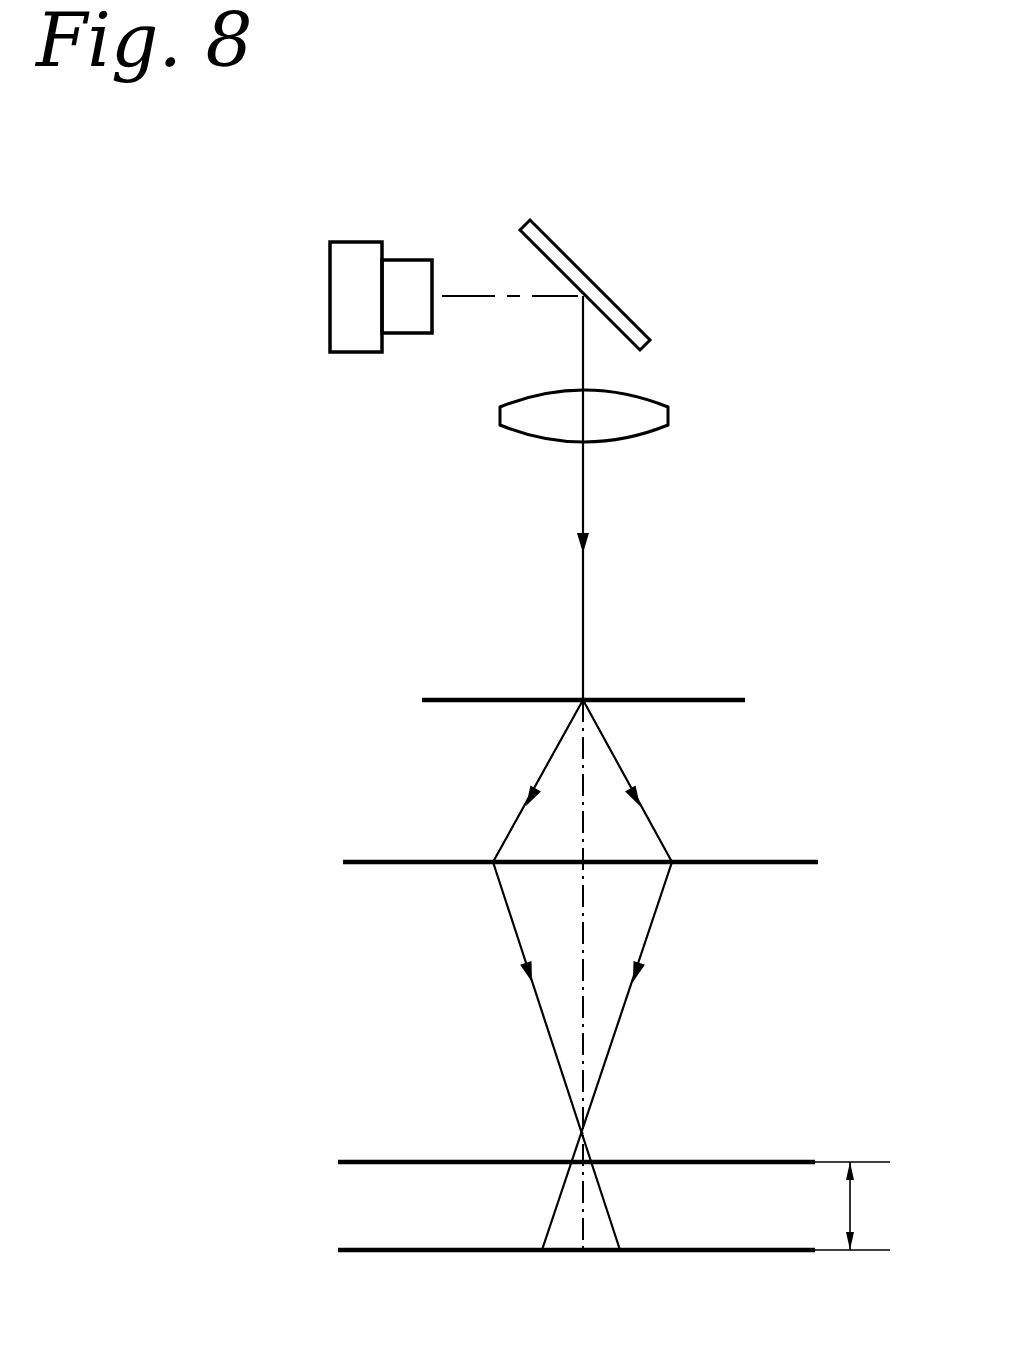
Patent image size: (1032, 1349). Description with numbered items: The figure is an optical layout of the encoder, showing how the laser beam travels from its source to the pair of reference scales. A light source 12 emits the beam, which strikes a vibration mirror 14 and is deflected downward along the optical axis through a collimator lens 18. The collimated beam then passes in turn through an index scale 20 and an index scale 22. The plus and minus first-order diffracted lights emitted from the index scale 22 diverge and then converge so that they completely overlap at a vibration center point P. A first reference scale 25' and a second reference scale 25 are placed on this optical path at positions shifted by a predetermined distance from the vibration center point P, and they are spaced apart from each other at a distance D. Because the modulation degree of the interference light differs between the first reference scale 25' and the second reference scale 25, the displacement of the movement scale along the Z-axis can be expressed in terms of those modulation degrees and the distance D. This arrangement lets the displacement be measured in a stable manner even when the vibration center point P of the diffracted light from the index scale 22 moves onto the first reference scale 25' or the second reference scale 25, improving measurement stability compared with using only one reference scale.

The light source 12 is at (417, 258).
The vibration mirror 14 is at (592, 285).
The collimator lens 18 is at (662, 407).
The index scale 20 is at (438, 697).
The index scale 22 is at (368, 860).
The first reference scale 25' is at (592, 1108).
The second reference scale 25 is at (561, 1212).
The vibration center point P is at (585, 1131).
The distance D is at (870, 1206).